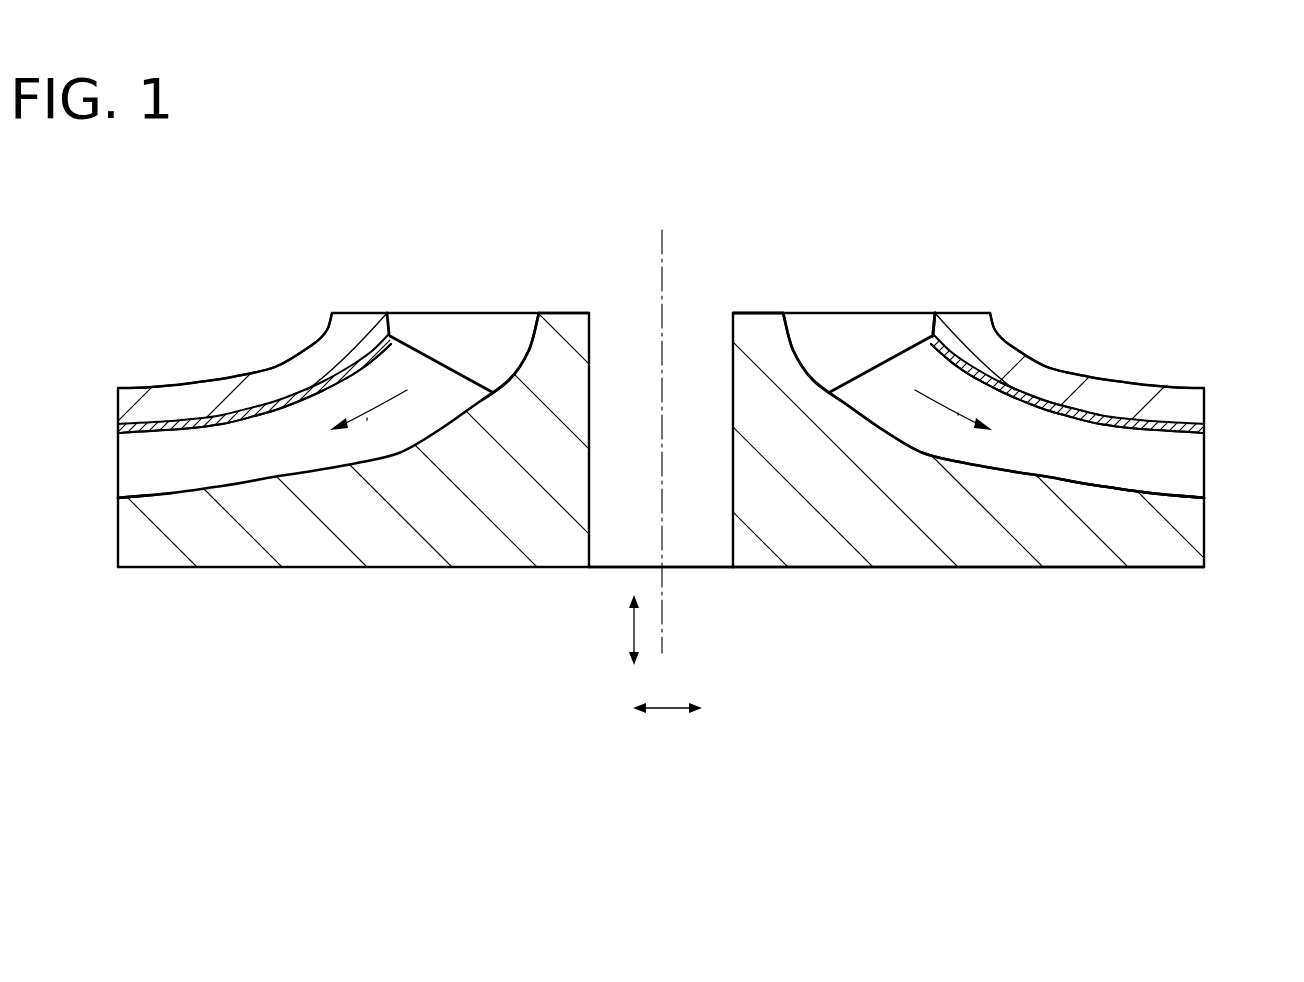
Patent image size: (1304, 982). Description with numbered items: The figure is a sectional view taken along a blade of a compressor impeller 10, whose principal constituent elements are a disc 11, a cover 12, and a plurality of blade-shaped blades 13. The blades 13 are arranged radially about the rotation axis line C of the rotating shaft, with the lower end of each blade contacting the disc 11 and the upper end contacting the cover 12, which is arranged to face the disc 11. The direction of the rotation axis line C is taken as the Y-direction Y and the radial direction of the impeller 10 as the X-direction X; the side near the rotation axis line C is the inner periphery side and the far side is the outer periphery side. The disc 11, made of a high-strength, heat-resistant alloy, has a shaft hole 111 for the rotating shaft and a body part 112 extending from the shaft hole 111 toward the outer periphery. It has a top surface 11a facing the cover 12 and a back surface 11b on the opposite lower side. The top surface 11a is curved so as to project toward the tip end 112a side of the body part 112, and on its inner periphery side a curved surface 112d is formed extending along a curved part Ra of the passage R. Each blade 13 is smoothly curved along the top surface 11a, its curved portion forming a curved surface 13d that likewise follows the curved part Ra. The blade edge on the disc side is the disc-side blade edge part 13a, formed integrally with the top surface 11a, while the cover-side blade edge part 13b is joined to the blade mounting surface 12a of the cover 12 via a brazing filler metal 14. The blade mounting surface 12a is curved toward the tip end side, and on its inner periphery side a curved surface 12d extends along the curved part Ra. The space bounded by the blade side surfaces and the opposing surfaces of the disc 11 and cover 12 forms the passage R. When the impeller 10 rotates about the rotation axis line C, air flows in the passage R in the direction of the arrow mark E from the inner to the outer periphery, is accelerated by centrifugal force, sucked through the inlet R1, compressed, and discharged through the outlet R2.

The impeller 10 is at (796, 184).
The disc 11 is at (1212, 525).
The top surface 11a is at (1170, 487).
The back surface 11b is at (1170, 567).
The cover 12 is at (1212, 407).
The blade mounting surface 12a is at (1150, 425).
The curved surface 12d is at (977, 388).
The blade 13 is at (870, 352).
The disc-side blade edge part 13a is at (1107, 493).
The cover-side blade edge part 13b is at (1045, 405).
The curved surface 13d is at (950, 458).
The brazing filler metal 14 is at (1005, 390).
The shaft hole 111 is at (718, 545).
The body part 112 is at (805, 567).
The tip end 112a is at (747, 313).
The curved surface 112d is at (917, 337).
The passage R is at (232, 472).
The inlet R1 is at (490, 323).
The outlet R2 is at (135, 463).
The curved part Ra is at (935, 313).
The arrow mark E is at (958, 413).
The rotation axis line C is at (662, 272).
The X-direction X is at (667, 724).
The Y-direction Y is at (625, 630).